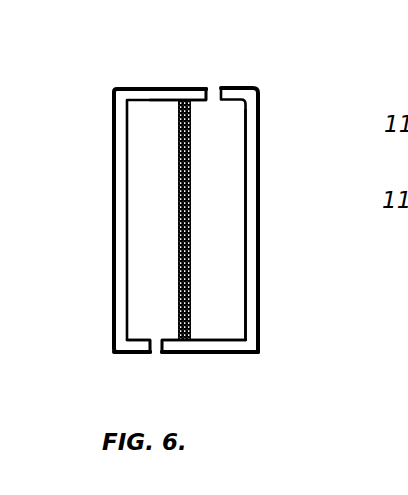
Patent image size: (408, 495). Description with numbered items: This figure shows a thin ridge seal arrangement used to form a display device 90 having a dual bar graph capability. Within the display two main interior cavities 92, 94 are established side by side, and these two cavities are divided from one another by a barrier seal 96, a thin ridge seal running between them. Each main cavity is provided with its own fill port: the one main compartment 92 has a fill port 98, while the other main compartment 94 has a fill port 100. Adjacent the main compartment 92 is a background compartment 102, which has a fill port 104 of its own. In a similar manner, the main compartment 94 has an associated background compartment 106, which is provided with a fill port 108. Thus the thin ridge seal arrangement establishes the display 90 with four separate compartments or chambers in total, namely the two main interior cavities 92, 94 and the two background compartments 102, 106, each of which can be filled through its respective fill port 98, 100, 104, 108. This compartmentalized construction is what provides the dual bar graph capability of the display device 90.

The display device 90 is at (105, 75).
The main interior cavity 92 is at (149, 188).
The main interior cavity 94 is at (221, 236).
The barrier seal 96 is at (191, 156).
The fill port 98 is at (152, 353).
The fill port 100 is at (220, 85).
The background compartment 102 is at (118, 240).
The fill port 104 is at (147, 86).
The background compartment 106 is at (257, 293).
The fill port 108 is at (217, 353).